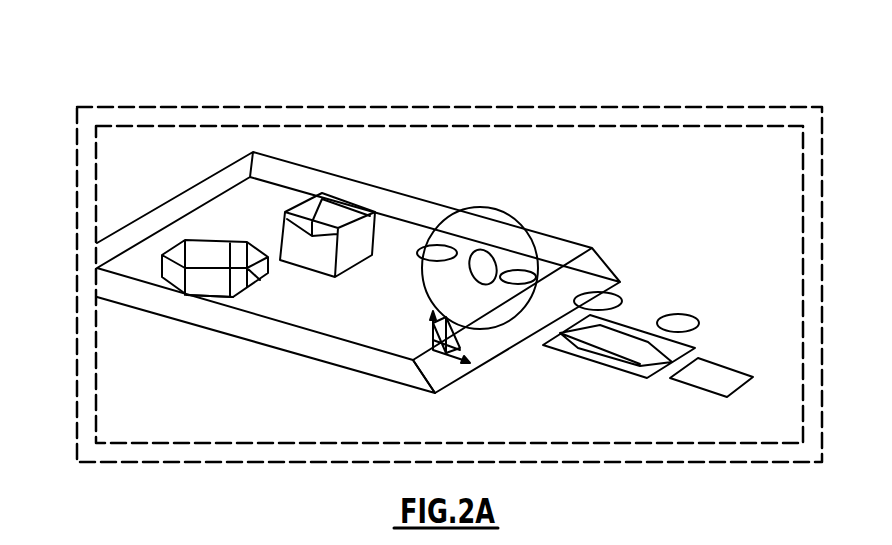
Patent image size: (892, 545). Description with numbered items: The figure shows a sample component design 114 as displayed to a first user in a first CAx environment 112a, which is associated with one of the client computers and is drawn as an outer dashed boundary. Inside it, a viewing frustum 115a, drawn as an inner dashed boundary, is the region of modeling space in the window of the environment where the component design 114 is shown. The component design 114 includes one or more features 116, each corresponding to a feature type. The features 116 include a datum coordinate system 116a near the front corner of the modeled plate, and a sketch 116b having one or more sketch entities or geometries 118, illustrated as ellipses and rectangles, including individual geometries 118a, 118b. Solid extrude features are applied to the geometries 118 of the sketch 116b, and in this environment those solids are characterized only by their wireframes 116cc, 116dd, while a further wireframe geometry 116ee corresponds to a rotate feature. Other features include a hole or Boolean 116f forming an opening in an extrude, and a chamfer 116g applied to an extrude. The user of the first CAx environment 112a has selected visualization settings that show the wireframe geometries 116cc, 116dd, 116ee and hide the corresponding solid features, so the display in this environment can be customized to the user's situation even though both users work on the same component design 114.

The first CAx environment 112a is at (223, 95).
The viewing frustum 115a is at (118, 110).
The component design 114 is at (188, 173).
The hole or Boolean 116f is at (207, 228).
The wireframe 116dd is at (359, 188).
The wireframe 116cc is at (419, 186).
The wireframe geometry 116ee is at (511, 200).
The sketch entity or geometry 118b is at (520, 270).
The features 116 is at (667, 316).
The sketch entities or geometries 118 is at (510, 354).
The sketch 116b is at (713, 330).
The chamfer 116g is at (426, 364).
The datum coordinate system 116a is at (416, 383).
The sketch entity or geometry 118a is at (238, 298).